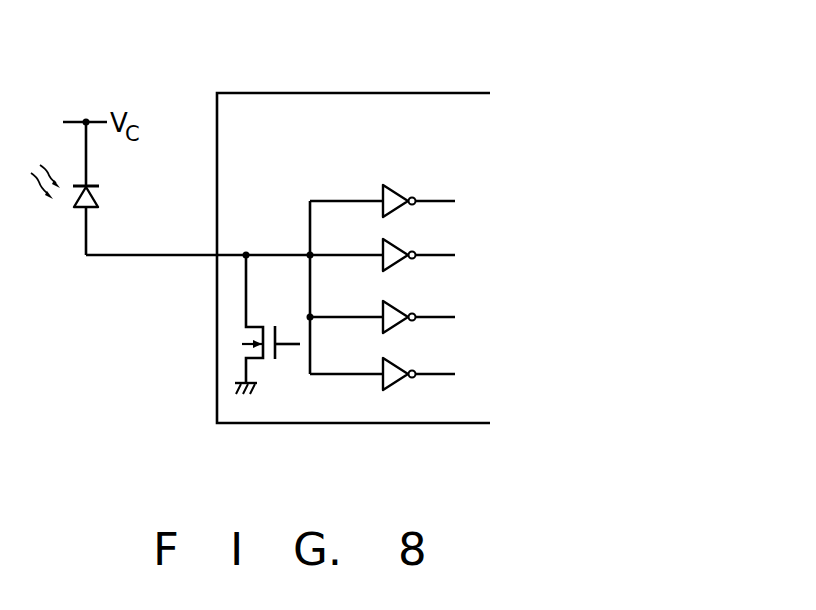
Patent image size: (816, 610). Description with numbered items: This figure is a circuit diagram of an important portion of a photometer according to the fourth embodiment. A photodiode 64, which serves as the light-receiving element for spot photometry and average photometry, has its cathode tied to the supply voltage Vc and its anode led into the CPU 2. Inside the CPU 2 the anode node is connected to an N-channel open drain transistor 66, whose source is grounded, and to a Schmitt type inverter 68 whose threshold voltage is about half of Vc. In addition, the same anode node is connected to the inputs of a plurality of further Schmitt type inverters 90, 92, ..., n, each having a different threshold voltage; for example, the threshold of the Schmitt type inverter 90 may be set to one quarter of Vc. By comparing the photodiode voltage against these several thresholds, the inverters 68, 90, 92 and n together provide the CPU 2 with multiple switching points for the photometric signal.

The CPU 2 is at (427, 93).
The photodiode 64 is at (98, 206).
The N-channel open drain transistor 66 is at (266, 364).
The Schmitt type inverter 68 is at (404, 193).
The Schmitt type inverter 90 is at (404, 251).
The Schmitt type inverter 92 is at (404, 312).
The Schmitt type inverter n is at (401, 369).